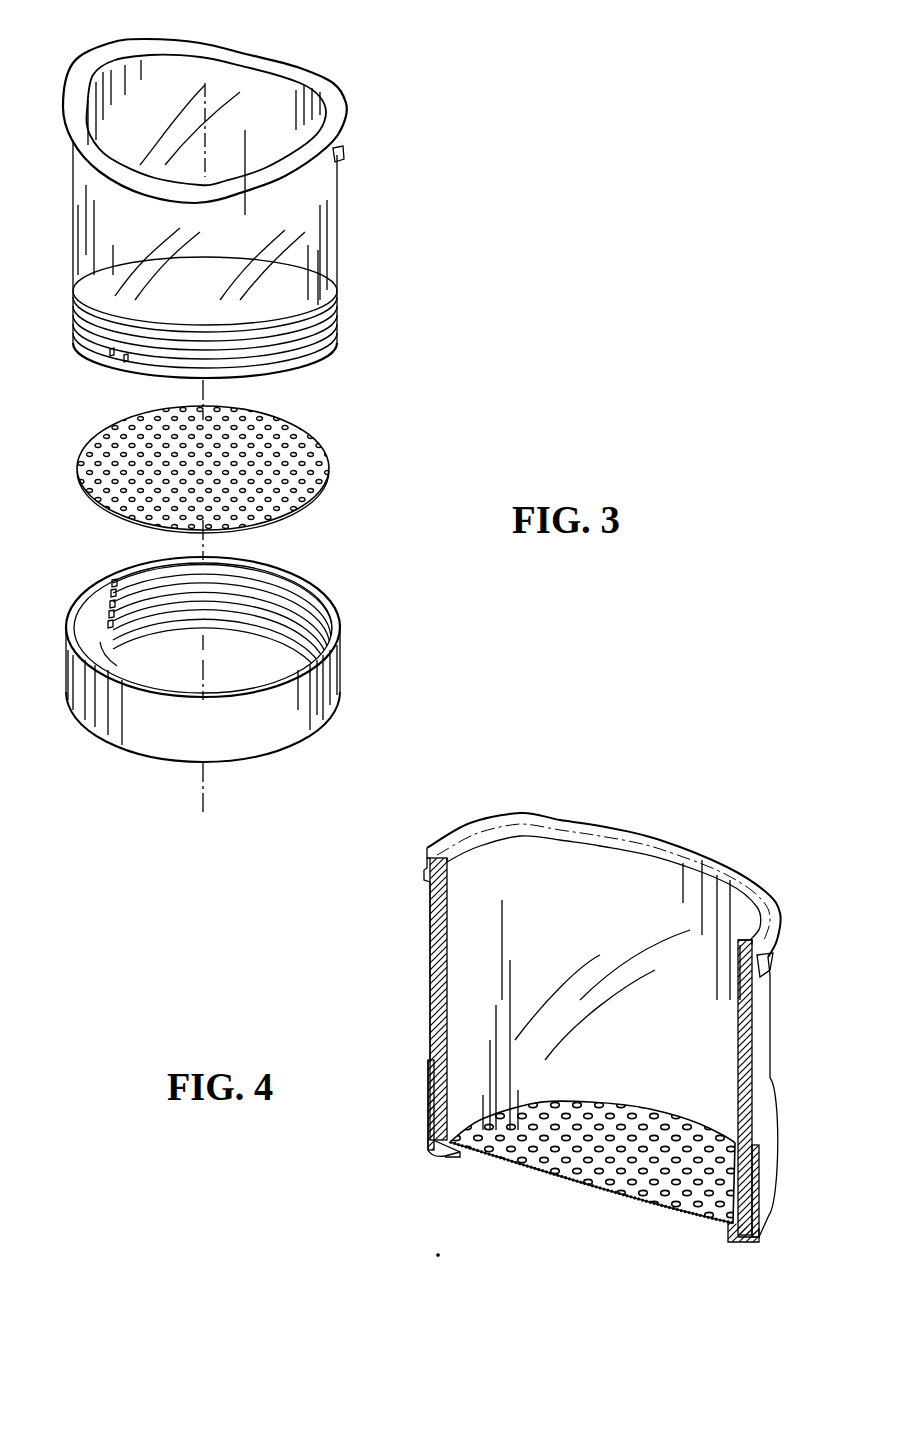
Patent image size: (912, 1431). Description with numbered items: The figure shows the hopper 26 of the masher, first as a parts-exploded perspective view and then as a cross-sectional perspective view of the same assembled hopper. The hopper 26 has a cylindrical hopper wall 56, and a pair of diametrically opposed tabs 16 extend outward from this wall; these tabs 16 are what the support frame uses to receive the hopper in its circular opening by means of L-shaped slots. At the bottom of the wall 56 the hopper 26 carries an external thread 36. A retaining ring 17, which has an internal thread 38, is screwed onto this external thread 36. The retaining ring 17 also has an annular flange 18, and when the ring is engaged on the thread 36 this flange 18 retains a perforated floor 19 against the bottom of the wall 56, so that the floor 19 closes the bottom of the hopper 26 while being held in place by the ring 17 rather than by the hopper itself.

In FIG. 3, the hopper 26 is at (330, 45).
In FIG. 4, the hopper 26 is at (565, 785).
In FIG. 3, the tabs 16 is at (345, 153).
In FIG. 4, the tabs 16 is at (770, 968).
In FIG. 3, the hopper wall 56 is at (335, 218).
In FIG. 4, the hopper wall 56 is at (758, 1048).
In FIG. 3, the external thread 36 is at (333, 314).
In FIG. 3, the perforated floor 19 is at (300, 494).
In FIG. 4, the perforated floor 19 is at (553, 1165).
In FIG. 3, the internal thread 38 is at (305, 588).
In FIG. 3, the annular flange 18 is at (113, 660).
In FIG. 4, the annular flange 18 is at (463, 1160).
In FIG. 3, the retaining ring 17 is at (302, 725).
In FIG. 4, the retaining ring 17 is at (762, 1225).